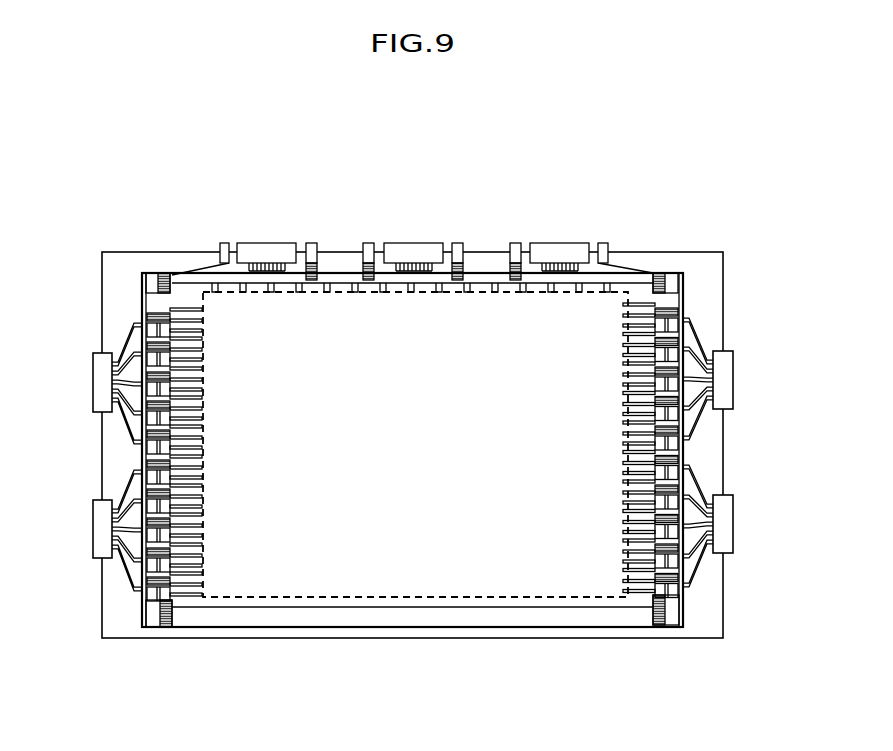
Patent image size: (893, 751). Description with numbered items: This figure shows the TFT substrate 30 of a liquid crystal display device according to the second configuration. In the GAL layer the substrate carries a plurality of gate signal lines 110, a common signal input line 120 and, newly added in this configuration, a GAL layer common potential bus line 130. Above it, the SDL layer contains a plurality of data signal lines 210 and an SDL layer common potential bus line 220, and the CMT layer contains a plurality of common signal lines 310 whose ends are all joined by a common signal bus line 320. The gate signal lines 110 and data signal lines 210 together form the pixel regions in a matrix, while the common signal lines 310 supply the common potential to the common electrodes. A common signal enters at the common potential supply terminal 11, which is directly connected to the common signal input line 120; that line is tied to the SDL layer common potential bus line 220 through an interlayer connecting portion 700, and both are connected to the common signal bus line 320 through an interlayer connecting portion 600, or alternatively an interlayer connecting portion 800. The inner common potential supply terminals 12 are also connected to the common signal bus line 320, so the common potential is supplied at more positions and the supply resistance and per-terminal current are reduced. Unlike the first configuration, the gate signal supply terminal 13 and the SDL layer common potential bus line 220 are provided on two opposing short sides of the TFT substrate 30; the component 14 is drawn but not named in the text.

The TFT substrate 30 is at (651, 666).
The GAL layer common potential bus line 130 is at (411, 628).
The common signal input line 120 is at (192, 268).
The gate signal lines 110 is at (183, 317).
The interlayer connecting portion 600 is at (147, 318).
The interlayer connecting portion 700 is at (158, 276).
The common signal lines 310 is at (190, 578).
The common signal bus line 320 is at (140, 610).
The data signal lines 210 is at (638, 268).
The SDL layer common potential bus line 220 is at (147, 567).
The gate signal supply terminal 13 is at (93, 384).
The common potential supply terminal 11 is at (224, 243).
The integrated circuit chip 14 is at (282, 243).
The common potential supply terminals 12 is at (311, 243).
The interlayer connecting portion 800 is at (510, 266).